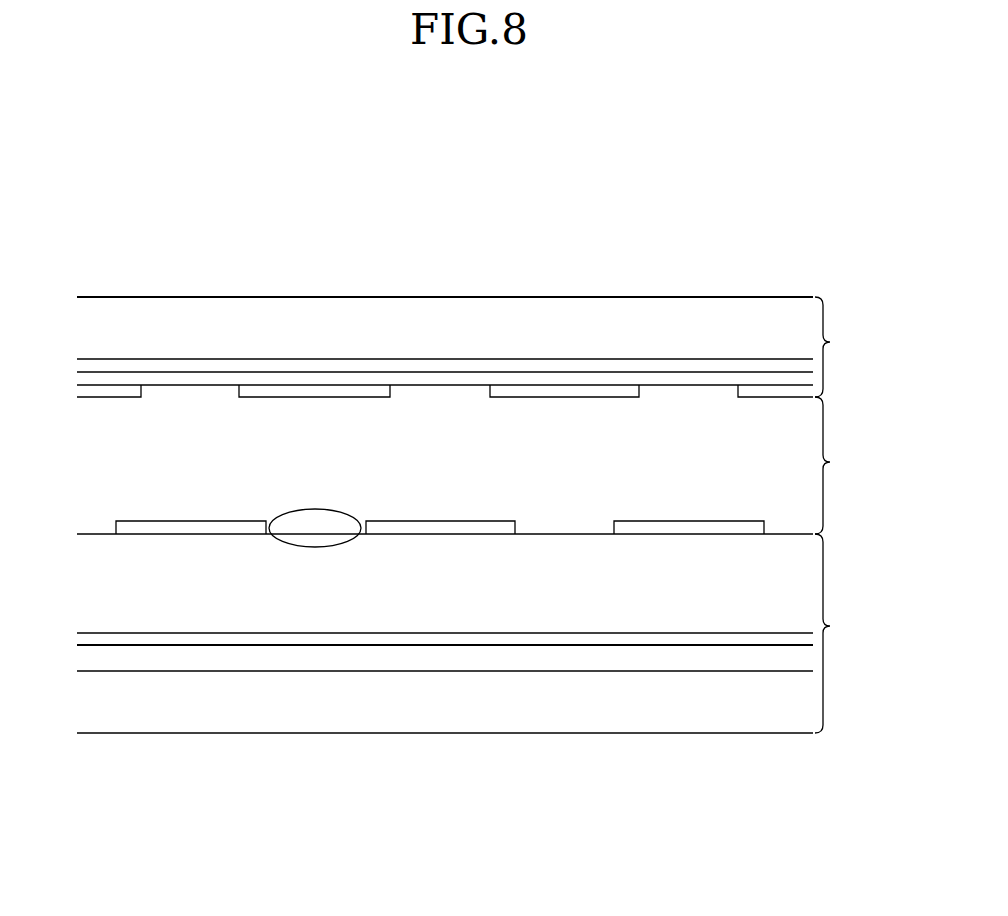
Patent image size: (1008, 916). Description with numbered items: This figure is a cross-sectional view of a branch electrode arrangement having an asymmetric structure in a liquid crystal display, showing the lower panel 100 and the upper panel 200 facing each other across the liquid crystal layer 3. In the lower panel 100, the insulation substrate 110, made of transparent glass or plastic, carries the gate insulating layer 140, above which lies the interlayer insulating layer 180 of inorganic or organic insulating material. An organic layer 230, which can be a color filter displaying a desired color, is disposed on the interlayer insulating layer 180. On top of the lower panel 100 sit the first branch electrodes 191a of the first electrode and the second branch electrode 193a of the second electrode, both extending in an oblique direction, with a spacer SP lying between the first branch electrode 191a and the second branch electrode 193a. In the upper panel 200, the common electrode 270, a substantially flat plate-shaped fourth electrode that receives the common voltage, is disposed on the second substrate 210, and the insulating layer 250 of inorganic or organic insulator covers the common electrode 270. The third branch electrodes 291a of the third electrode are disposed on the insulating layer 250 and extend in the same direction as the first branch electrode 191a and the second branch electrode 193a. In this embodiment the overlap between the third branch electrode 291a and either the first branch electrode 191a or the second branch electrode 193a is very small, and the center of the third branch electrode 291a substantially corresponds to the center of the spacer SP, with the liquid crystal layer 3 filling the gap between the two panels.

The upper panel 200 is at (473, 314).
The second substrate 210 is at (194, 313).
The common electrode 270 is at (442, 365).
The insulating layer 250 is at (691, 380).
The third branch electrode 291a is at (313, 390).
The liquid crystal layer 3 is at (831, 465).
The spacer SP is at (318, 509).
The lower panel 100 is at (473, 657).
The organic layer 230 is at (762, 763).
The interlayer insulating layer 180 is at (125, 763).
The gate insulating layer 140 is at (578, 763).
The insulation substrate 110 is at (343, 763).
The first branch electrode 191a is at (212, 763).
The second branch electrode 193a is at (445, 763).